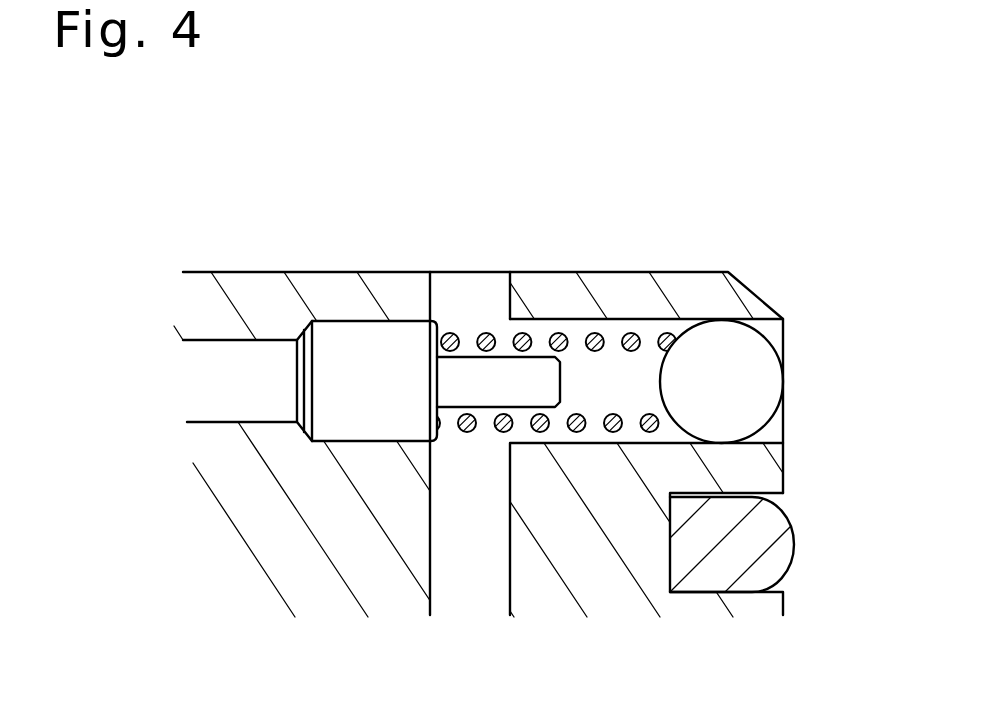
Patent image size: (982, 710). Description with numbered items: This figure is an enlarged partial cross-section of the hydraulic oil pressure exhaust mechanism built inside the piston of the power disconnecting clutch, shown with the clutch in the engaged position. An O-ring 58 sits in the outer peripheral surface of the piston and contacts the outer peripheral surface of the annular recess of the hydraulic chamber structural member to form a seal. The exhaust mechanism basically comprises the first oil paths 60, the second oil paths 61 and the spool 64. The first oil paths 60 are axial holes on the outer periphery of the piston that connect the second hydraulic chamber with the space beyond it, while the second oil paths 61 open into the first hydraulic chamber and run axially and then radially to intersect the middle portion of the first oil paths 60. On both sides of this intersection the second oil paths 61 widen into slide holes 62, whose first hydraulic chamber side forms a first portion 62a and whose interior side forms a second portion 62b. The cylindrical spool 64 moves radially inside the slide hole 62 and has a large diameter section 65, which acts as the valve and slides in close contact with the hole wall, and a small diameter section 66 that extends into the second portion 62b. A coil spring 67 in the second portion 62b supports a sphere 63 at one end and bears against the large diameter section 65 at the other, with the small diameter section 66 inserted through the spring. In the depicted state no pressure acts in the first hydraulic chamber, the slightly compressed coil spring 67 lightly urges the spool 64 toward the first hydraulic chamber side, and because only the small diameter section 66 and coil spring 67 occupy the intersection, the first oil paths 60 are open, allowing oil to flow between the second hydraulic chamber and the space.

The O-ring 58 is at (750, 532).
The first oil paths 60 is at (432, 300).
The second oil paths 61 is at (228, 420).
The slide holes 62 is at (551, 301).
The first portion of slide hole 62a is at (380, 321).
The second portion of slide hole 62b is at (642, 320).
The sphere 63 is at (742, 348).
The spool 64 is at (361, 342).
The large diameter section 65 is at (326, 347).
The small diameter section 66 is at (498, 377).
The coil spring 67 is at (642, 322).